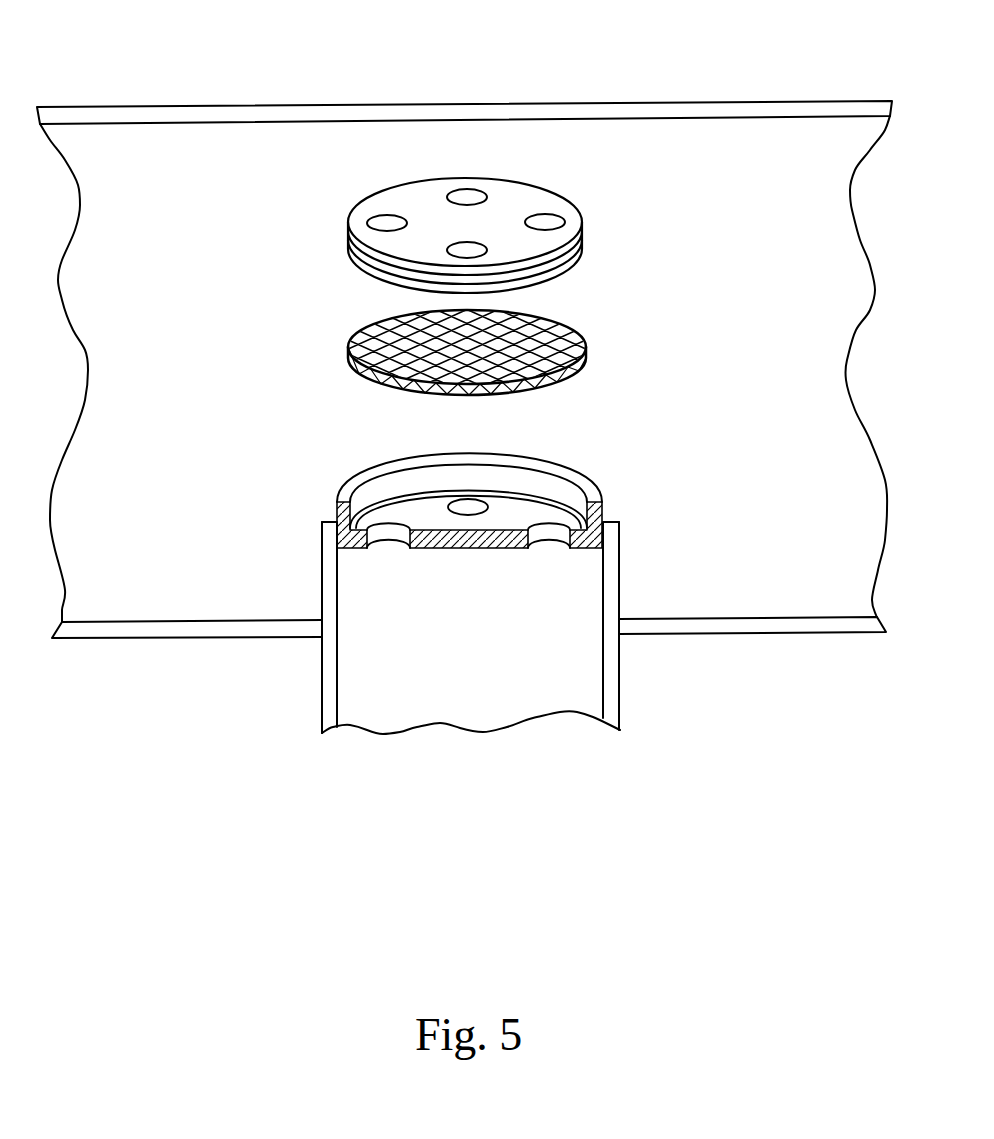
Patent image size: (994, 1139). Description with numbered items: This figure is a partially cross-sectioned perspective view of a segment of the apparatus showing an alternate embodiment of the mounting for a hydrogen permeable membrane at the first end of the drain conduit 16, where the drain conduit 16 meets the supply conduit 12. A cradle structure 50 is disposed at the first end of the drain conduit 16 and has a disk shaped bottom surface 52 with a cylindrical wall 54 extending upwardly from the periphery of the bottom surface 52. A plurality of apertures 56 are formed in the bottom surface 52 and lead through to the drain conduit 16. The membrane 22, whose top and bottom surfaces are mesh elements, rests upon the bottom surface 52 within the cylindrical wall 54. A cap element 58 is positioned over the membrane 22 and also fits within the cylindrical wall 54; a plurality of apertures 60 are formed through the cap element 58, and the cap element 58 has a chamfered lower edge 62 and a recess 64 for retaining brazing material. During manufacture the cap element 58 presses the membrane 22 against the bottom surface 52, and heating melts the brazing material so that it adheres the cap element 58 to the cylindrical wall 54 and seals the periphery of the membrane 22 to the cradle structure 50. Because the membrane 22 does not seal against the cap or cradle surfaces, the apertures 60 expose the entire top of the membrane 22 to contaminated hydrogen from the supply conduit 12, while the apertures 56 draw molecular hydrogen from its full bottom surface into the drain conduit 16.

The supply conduit 12 is at (737, 105).
The drain conduit 16 is at (620, 677).
The membrane 22 is at (588, 343).
The cradle structure 50 is at (605, 505).
The bottom surface 52 is at (420, 523).
The cylindrical wall 54 is at (583, 472).
The apertures 56 is at (548, 532).
The cap element 58 is at (528, 198).
The apertures 60 is at (383, 218).
The chamfered lower edge 62 is at (560, 283).
The recess 64 is at (585, 255).